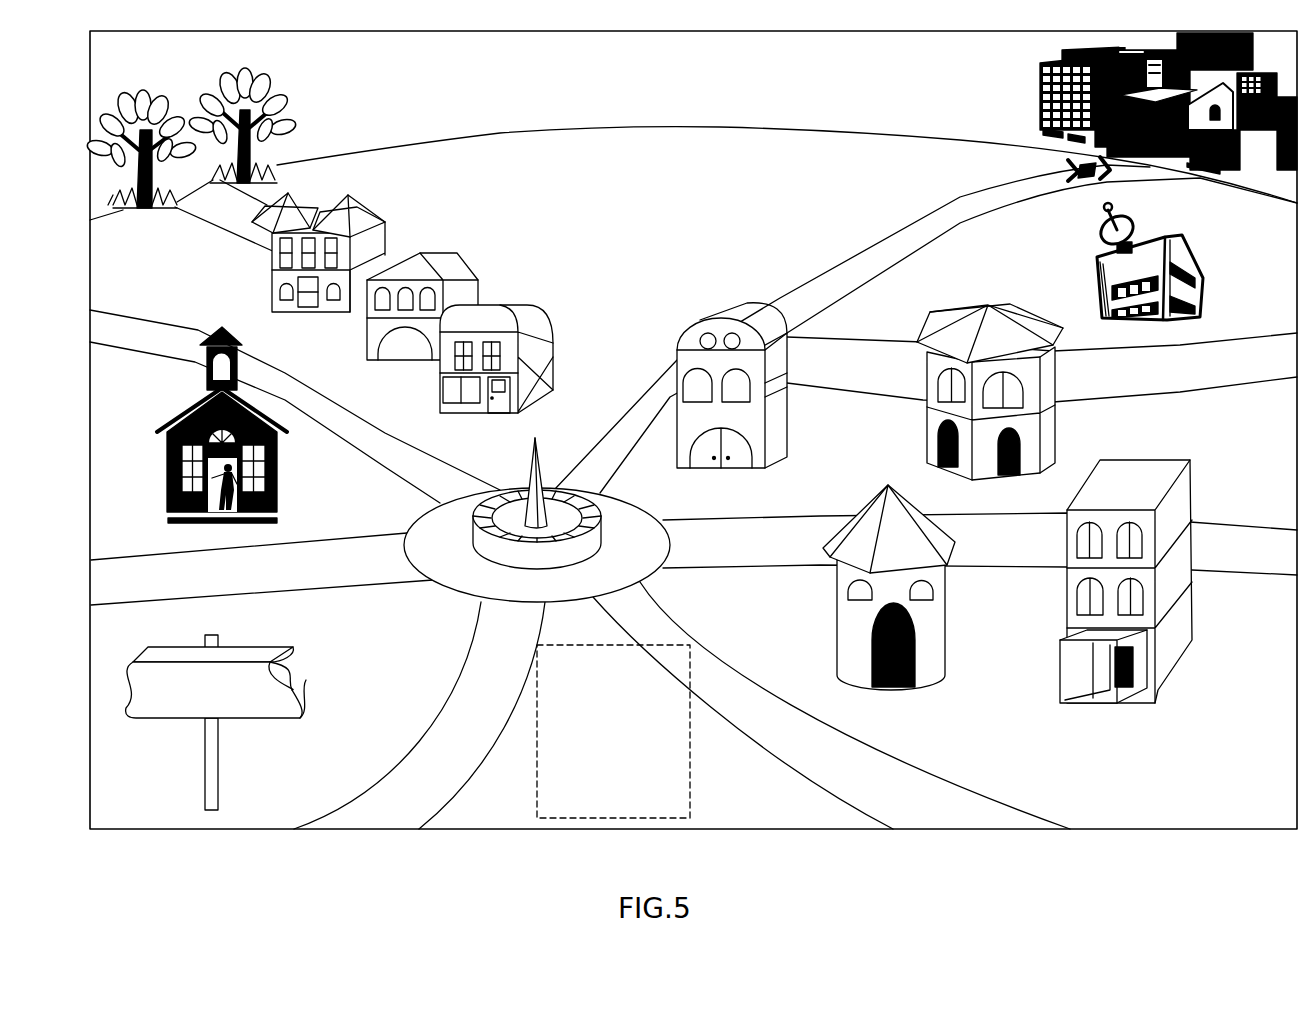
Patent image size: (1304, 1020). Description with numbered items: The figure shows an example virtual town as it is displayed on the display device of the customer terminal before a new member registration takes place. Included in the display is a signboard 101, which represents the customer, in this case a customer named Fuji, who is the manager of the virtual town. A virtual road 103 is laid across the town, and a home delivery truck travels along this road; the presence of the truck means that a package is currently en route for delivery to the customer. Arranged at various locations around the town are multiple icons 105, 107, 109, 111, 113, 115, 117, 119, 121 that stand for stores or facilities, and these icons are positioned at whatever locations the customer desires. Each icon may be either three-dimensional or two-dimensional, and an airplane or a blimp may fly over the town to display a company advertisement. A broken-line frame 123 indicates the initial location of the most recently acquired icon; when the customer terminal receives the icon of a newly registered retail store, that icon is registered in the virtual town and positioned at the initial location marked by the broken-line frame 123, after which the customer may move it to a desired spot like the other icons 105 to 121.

The signboard 101 is at (250, 645).
The virtual road 103 is at (427, 730).
The icon 105 is at (280, 483).
The icon 107 is at (870, 497).
The icon 109 is at (1193, 502).
The icon 111 is at (985, 303).
The icon 113 is at (1200, 262).
The icon 115 is at (783, 333).
The icon 117 is at (535, 303).
The icon 119 is at (447, 252).
The icon 121 is at (365, 207).
The broken-line frame 123 is at (688, 663).